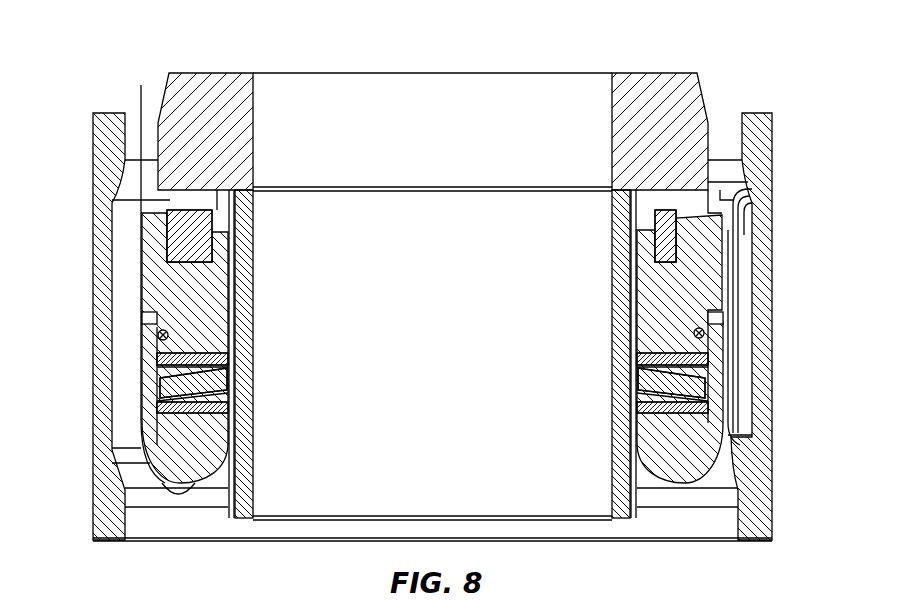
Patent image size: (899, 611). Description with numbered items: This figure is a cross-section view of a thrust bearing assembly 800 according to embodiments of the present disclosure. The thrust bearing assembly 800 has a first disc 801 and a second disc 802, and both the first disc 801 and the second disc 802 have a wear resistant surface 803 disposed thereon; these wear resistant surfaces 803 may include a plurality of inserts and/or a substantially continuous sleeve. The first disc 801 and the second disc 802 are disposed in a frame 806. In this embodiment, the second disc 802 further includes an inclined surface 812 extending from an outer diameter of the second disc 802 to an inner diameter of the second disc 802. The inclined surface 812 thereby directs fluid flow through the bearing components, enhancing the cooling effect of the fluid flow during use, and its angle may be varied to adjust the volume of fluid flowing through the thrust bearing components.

The thrust bearing assembly 800 is at (622, 46).
The first disc 801 is at (675, 133).
The second disc 802 is at (710, 282).
The wear resistant surface 803 is at (165, 216).
The frame 806 is at (102, 293).
The inclined surface 812 is at (723, 222).